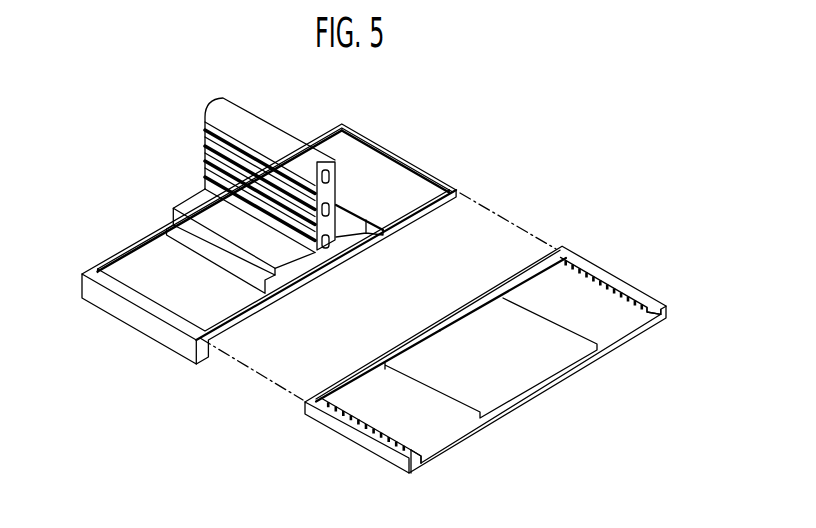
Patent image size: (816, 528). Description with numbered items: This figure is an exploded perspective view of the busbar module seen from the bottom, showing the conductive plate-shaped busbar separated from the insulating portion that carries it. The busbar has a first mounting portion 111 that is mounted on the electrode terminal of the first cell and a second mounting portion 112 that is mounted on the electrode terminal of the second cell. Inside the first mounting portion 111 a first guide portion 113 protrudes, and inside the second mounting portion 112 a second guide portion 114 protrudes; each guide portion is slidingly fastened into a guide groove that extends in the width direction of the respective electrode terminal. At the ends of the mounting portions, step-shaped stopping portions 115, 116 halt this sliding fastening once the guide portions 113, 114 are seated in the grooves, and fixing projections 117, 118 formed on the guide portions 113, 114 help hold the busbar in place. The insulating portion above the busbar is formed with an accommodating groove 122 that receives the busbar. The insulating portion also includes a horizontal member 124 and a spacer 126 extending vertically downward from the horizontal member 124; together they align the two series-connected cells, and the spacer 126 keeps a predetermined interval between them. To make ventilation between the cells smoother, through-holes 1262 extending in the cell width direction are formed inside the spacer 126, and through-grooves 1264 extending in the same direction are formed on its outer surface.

The first mounting portion 111 is at (621, 318).
The second mounting portion 112 is at (436, 430).
The first guide portion 113 is at (653, 307).
The second guide portion 114 is at (410, 453).
The stopping portion 115 is at (522, 275).
The stopping portion 116 is at (358, 370).
The fixing projection 117 is at (618, 282).
The fixing projection 118 is at (370, 427).
The accommodating groove 122 is at (331, 266).
The horizontal member 124 is at (197, 197).
The spacer 126 is at (207, 152).
The through-holes 1262 is at (327, 172).
The through-grooves 1264 is at (335, 188).